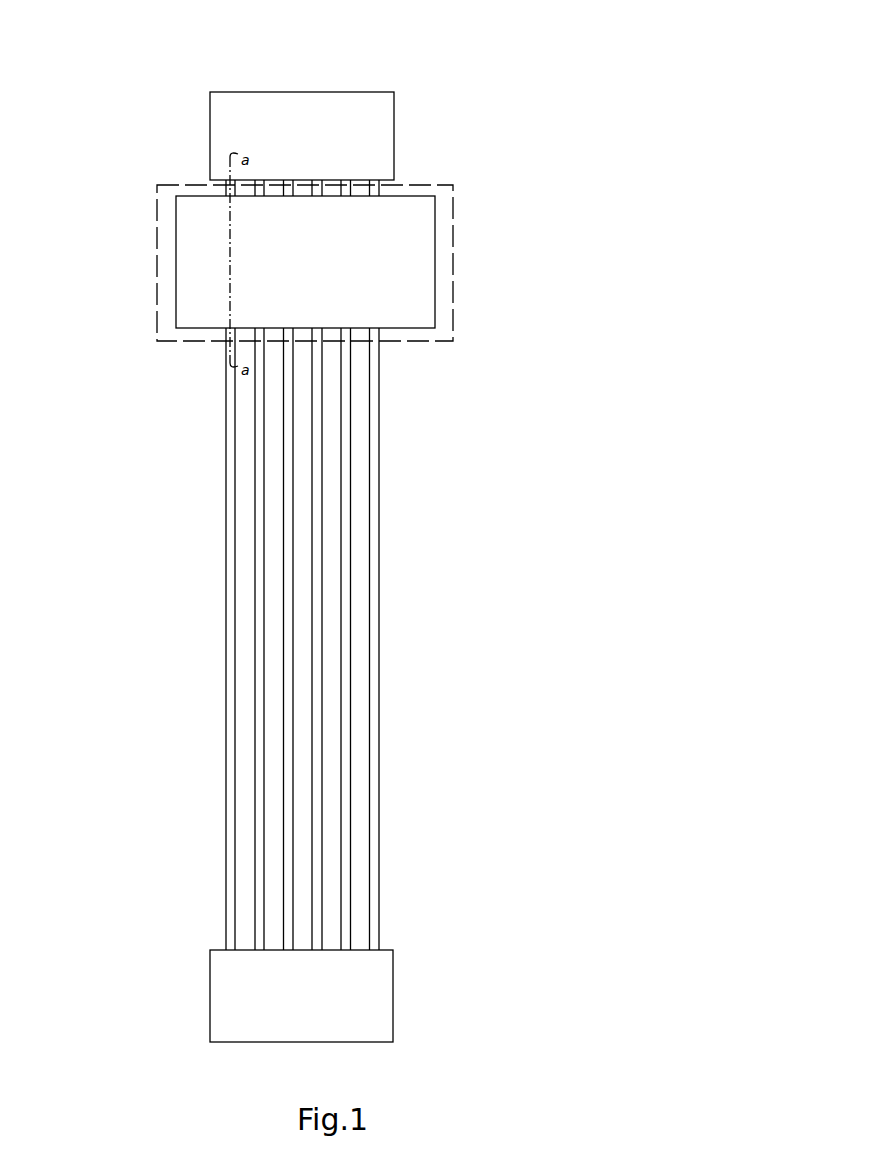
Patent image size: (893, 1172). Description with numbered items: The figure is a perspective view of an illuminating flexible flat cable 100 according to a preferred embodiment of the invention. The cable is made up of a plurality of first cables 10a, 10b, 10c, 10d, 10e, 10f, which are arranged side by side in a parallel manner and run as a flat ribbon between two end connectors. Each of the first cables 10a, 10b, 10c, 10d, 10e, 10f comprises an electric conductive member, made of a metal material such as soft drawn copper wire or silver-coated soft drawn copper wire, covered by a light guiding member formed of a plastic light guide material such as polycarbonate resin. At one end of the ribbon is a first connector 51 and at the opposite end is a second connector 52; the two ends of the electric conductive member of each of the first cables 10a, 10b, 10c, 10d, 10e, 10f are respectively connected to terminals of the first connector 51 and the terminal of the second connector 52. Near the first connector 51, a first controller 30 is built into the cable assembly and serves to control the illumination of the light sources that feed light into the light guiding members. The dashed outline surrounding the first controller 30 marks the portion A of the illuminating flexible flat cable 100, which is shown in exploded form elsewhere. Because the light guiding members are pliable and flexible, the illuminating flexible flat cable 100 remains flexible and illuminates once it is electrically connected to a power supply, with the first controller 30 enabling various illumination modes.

The illuminating flexible flat cable 100 is at (585, 53).
The first connector 51 is at (240, 113).
The second connector 52 is at (242, 995).
The first controller 30 is at (192, 298).
The portion A is at (453, 263).
The first cable 10a is at (226, 452).
The first cable 10b is at (264, 450).
The first cable 10c is at (290, 448).
The first cable 10d is at (379, 452).
The first cable 10e is at (341, 450).
The first cable 10f is at (315, 448).